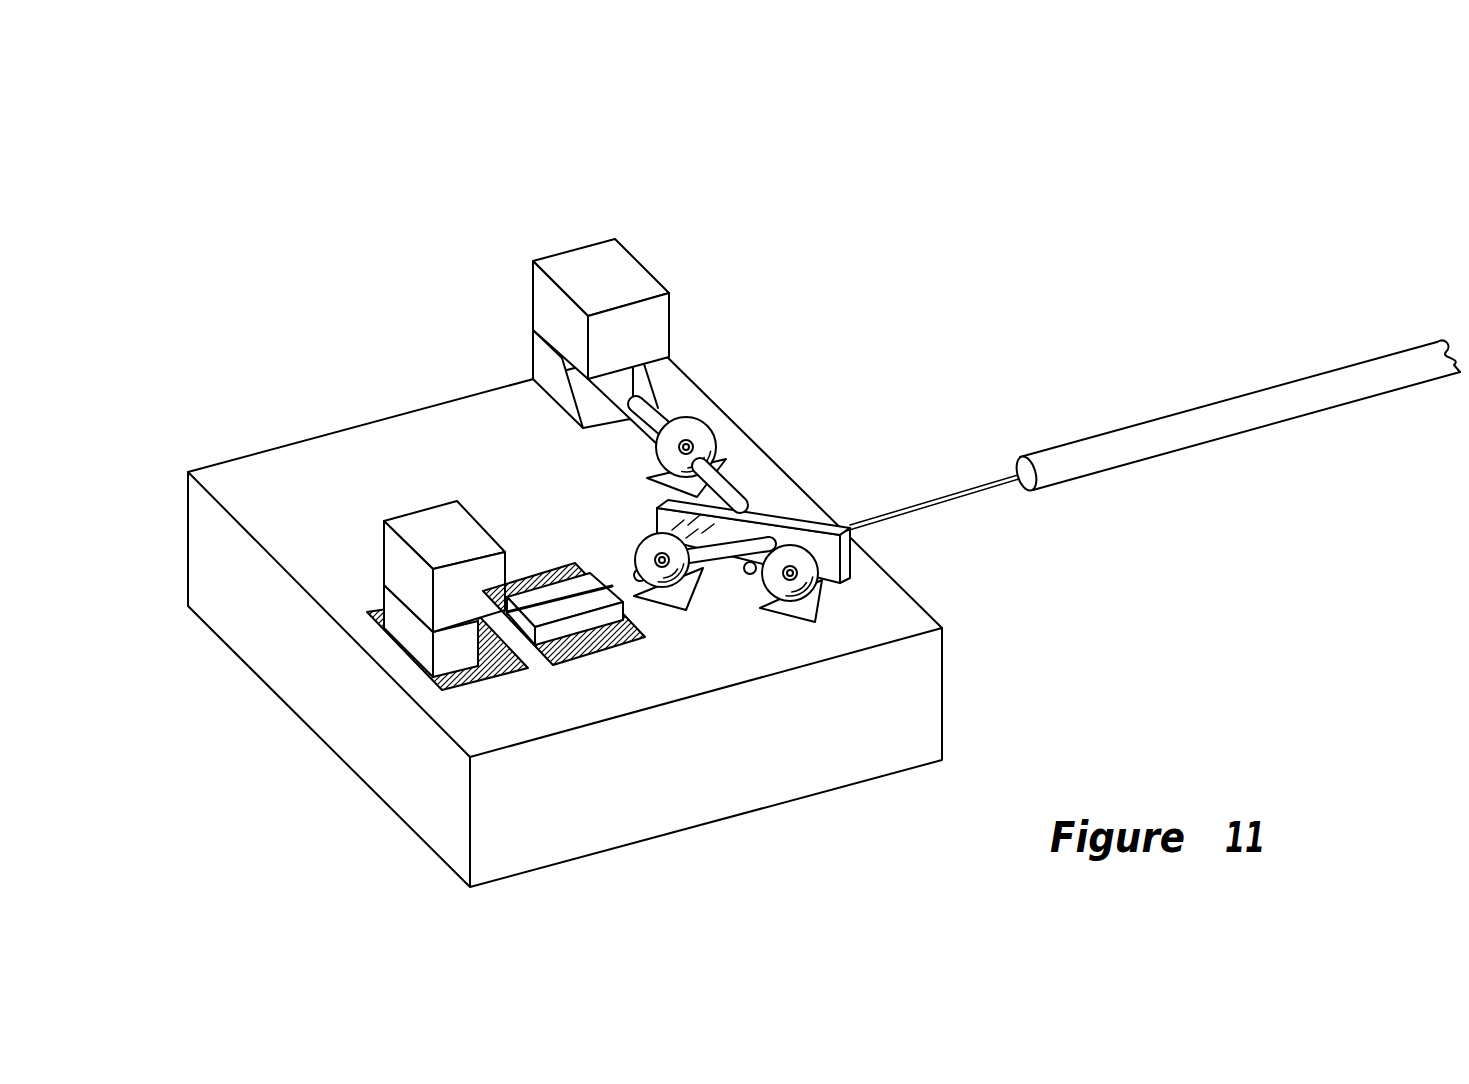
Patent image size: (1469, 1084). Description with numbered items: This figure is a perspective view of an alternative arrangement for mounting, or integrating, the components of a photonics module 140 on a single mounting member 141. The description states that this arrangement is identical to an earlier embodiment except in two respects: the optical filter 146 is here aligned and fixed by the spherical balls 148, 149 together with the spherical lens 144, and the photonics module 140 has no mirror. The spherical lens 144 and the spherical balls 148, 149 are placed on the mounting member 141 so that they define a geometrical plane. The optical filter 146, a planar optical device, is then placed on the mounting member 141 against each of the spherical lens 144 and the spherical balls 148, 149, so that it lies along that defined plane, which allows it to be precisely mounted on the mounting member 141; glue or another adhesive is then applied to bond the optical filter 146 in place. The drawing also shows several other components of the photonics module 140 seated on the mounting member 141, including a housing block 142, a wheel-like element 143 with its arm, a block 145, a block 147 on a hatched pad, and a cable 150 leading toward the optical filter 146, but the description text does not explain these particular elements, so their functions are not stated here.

The photonics module 140 is at (857, 227).
The mounting member 141 is at (187, 550).
The light source housing 142 is at (580, 248).
The pivoting arm wheel 143 is at (713, 438).
The spherical lens 144 is at (268, 490).
The detector block 145 is at (585, 623).
The optical filter 146 is at (853, 553).
The component block 147 is at (410, 632).
The spherical ball 148 is at (818, 600).
The spherical ball 149 is at (740, 580).
The optical fiber cable 150 is at (1173, 412).